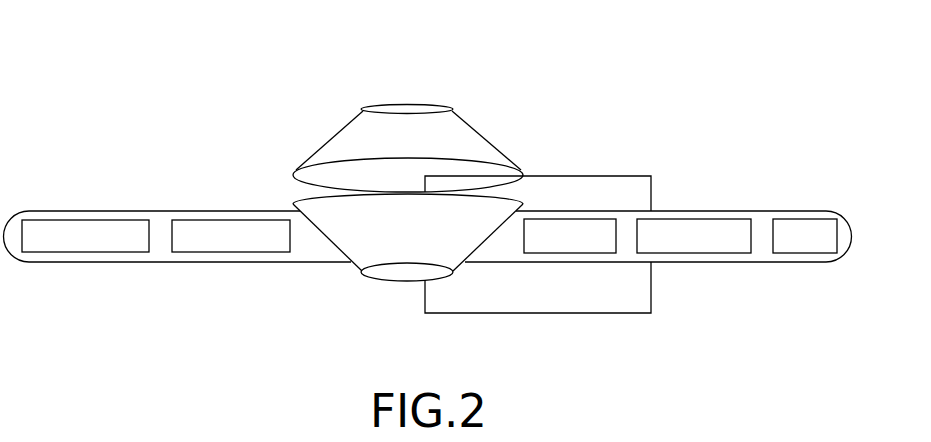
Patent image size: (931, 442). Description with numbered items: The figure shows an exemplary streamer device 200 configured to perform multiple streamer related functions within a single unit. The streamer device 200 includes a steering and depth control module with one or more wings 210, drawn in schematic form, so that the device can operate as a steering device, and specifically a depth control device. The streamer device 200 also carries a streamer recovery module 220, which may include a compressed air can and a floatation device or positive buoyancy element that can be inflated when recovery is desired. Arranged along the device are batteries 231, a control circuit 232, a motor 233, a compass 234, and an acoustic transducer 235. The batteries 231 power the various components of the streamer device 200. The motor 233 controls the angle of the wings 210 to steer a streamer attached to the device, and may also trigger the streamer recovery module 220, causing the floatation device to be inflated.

The streamer device 200 is at (166, 98).
The wings 210 is at (478, 132).
The streamer recovery module 220 is at (630, 302).
The batteries 231 is at (108, 252).
The control circuit 232 is at (243, 252).
The motor 233 is at (573, 220).
The compass 234 is at (685, 218).
The acoustic transducer 235 is at (798, 218).